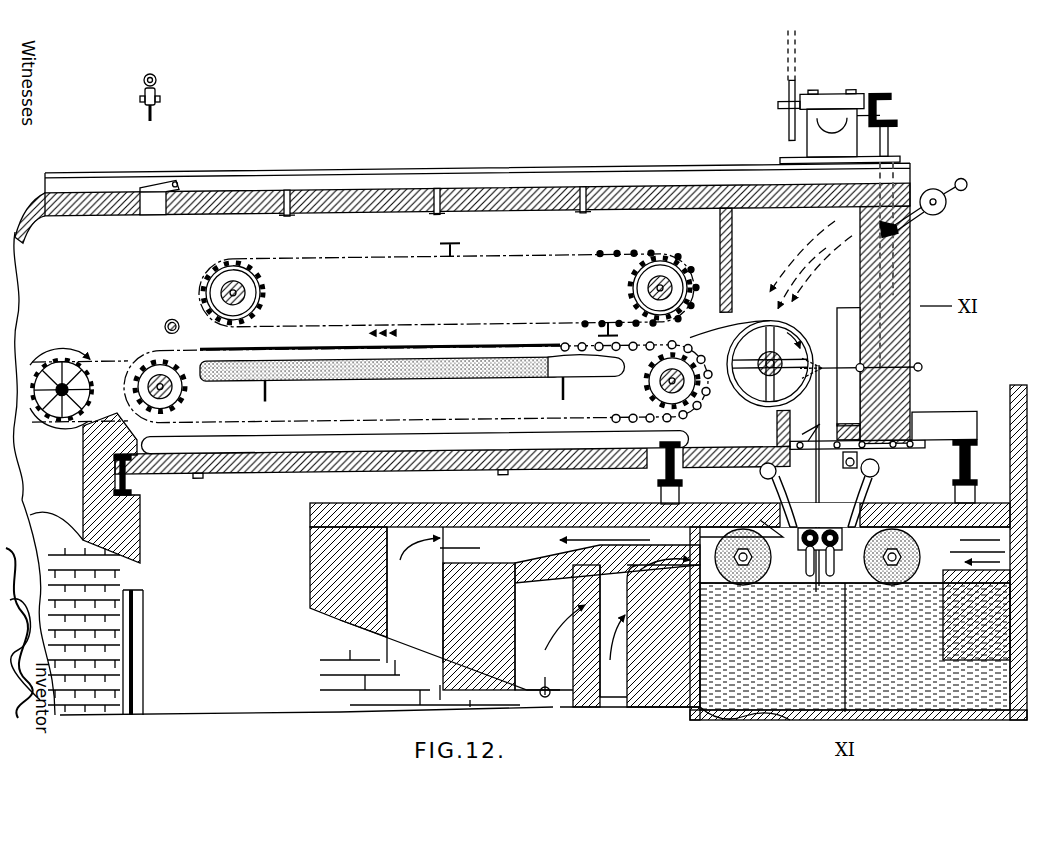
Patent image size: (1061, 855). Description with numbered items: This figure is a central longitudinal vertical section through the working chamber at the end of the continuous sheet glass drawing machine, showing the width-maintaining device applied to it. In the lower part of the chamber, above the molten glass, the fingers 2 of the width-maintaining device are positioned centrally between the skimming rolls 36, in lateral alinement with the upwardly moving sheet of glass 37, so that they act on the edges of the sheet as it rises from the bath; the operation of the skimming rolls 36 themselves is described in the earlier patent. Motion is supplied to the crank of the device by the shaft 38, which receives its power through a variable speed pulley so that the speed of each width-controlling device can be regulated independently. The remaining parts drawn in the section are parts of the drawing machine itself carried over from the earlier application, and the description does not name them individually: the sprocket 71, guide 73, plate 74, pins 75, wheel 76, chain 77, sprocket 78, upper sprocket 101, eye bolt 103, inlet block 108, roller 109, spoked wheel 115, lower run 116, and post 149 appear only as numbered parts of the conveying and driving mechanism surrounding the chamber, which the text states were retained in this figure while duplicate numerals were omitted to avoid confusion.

The fingers 2 is at (817, 557).
The skimming rolls 36 is at (820, 555).
The sheet of glass 37 is at (814, 500).
The shaft 38 is at (912, 297).
The conveyor chain sprocket 71 is at (700, 388).
The guide nose 73 is at (556, 368).
The supporting plate 74 is at (410, 377).
The plate pins 75 is at (562, 399).
The driving wheel 76 is at (722, 333).
The lower conveyor chain 77 is at (195, 387).
The conveyor sprocket 78 is at (150, 374).
The upper chain sprocket 101 is at (237, 280).
The eye bolt 103 is at (158, 104).
The top inlet block 108 is at (155, 206).
The guide roller 109 is at (165, 324).
The spoked wheel 115 is at (55, 375).
The lower belt run 116 is at (58, 406).
The support post 149 is at (777, 425).